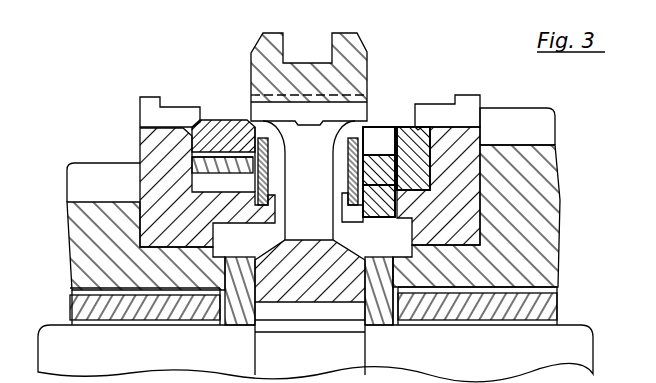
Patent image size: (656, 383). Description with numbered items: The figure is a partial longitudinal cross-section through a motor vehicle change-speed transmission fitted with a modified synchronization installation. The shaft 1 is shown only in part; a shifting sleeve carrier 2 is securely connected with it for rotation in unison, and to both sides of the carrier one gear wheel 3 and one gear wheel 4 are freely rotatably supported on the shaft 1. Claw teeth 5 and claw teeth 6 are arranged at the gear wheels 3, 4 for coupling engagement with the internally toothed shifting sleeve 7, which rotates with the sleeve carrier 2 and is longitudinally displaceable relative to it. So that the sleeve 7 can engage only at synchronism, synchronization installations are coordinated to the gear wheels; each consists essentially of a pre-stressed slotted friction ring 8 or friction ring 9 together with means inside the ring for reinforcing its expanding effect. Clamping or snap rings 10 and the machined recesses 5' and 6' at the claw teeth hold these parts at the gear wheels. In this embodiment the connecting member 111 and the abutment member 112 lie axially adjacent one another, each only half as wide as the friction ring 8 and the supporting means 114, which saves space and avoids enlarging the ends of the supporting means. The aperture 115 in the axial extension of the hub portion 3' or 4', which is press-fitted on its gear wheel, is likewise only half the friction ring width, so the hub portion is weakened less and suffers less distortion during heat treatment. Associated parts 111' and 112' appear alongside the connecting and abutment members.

The shaft 1 is at (423, 361).
The shifting sleeve carrier 2 is at (318, 184).
The gear wheel 3 is at (141, 244).
The hub portion 3' is at (208, 192).
The gear wheel 4 is at (480, 216).
The hub portion 4' is at (406, 192).
The claw teeth 5 is at (152, 102).
The machined recess 5' is at (185, 94).
The claw teeth 6 is at (454, 98).
The machined recess 6' is at (433, 100).
The shifting sleeve 7 is at (350, 55).
The friction ring 8 is at (220, 132).
The friction ring 9 is at (380, 136).
The clamping ring 10 is at (347, 175).
The connecting member 111 is at (498, 153).
The upper ring of housing 111' is at (521, 113).
The abutment member 112 is at (482, 176).
The lower packing element 112' is at (485, 225).
The supporting means 114 is at (203, 165).
The aperture 115 is at (353, 213).